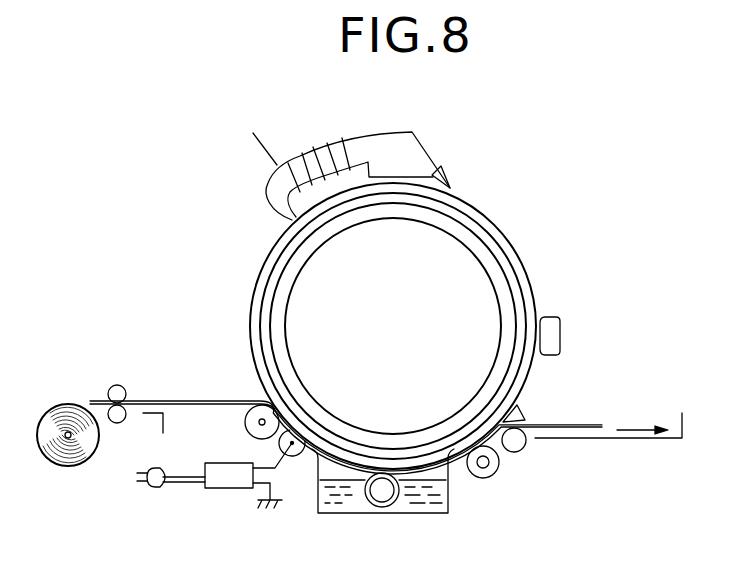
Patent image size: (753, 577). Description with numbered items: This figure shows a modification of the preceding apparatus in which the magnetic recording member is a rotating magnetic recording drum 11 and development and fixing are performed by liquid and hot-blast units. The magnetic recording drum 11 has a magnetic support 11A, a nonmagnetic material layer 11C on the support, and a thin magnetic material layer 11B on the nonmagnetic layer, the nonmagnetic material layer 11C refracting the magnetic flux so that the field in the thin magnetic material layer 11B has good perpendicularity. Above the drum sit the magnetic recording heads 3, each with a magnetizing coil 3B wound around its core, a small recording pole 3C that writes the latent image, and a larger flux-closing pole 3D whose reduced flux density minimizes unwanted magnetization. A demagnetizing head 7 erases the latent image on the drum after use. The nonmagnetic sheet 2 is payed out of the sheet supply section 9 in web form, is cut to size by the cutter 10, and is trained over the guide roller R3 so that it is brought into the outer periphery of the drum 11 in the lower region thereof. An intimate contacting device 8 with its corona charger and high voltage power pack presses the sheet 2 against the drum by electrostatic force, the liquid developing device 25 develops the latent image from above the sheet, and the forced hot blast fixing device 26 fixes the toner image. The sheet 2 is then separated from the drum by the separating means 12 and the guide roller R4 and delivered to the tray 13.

The nonmagnetic sheet 2 is at (210, 400).
The magnetic recording heads 3 is at (367, 170).
The magnetizing coil 3B is at (350, 170).
The recording pole 3C is at (293, 220).
The flux-closing pole 3D is at (436, 185).
The demagnetizing head 7 is at (562, 331).
The intimate contacting device 8 is at (212, 491).
The sheet supply section 9 is at (58, 466).
The cutter 10 is at (167, 400).
The magnetic recording drum 11 is at (419, 326).
The magnetic support 11A is at (489, 258).
The thin magnetic material layer 11B is at (489, 228).
The nonmagnetic material layer 11C is at (506, 250).
The separating means 12 is at (521, 405).
The tray 13 is at (632, 442).
The liquid developing device 25 is at (368, 514).
The forced hot blast fixing device 26 is at (490, 480).
The guide roller R3 is at (245, 424).
The guide roller R4 is at (520, 452).